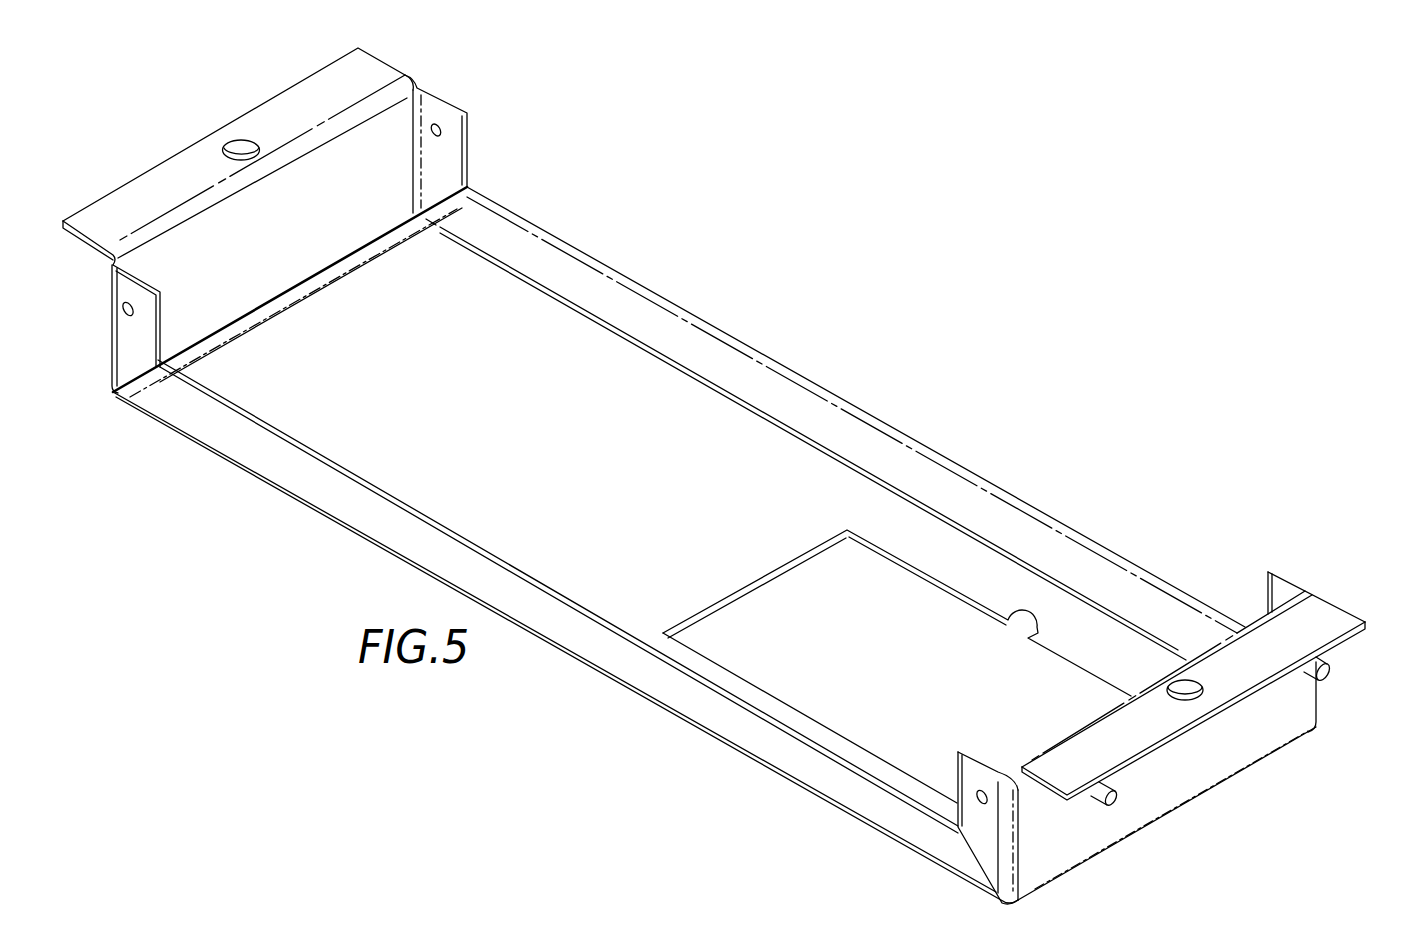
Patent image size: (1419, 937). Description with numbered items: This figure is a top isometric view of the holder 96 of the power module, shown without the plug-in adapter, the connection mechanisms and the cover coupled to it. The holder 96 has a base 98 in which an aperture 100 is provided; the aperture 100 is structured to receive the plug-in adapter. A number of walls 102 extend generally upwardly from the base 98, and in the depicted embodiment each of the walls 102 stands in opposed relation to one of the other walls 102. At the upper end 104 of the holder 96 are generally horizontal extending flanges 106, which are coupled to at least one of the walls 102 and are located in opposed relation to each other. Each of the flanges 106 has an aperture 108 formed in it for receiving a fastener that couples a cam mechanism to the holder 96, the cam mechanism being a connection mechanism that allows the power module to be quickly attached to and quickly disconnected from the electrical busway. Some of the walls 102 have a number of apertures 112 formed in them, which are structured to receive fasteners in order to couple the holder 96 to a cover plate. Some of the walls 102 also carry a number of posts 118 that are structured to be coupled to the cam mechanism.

The holder 96 is at (261, 566).
The base 98 is at (565, 545).
The aperture 100 is at (897, 666).
The walls 102 is at (737, 543).
The upper end 104 is at (725, 467).
The flanges 106 is at (735, 424).
The aperture 108 is at (690, 411).
The apertures 112 is at (662, 489).
The posts 118 is at (1206, 752).